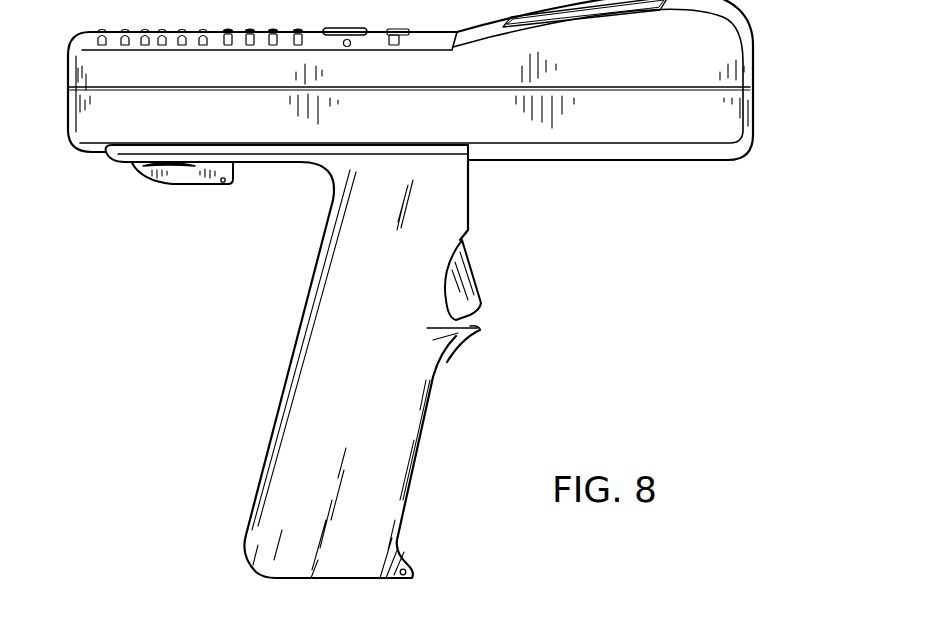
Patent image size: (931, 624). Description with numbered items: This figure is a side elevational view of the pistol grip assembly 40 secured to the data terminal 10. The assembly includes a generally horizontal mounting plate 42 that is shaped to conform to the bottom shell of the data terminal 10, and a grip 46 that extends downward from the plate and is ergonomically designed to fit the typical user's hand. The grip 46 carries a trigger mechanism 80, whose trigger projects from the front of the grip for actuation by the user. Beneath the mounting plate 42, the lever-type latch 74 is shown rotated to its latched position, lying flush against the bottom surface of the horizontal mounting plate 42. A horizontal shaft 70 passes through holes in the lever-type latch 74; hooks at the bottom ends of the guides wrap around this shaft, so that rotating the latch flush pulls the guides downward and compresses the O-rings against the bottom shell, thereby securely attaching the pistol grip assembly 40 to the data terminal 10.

The data terminal 10 is at (587, 158).
The pistol grip assembly 40 is at (307, 308).
The horizontal mounting plate 42 is at (267, 163).
The grip 46 is at (393, 475).
The horizontal shaft 70 is at (222, 183).
The lever-type latch 74 is at (168, 172).
The trigger mechanism 80 is at (473, 283).